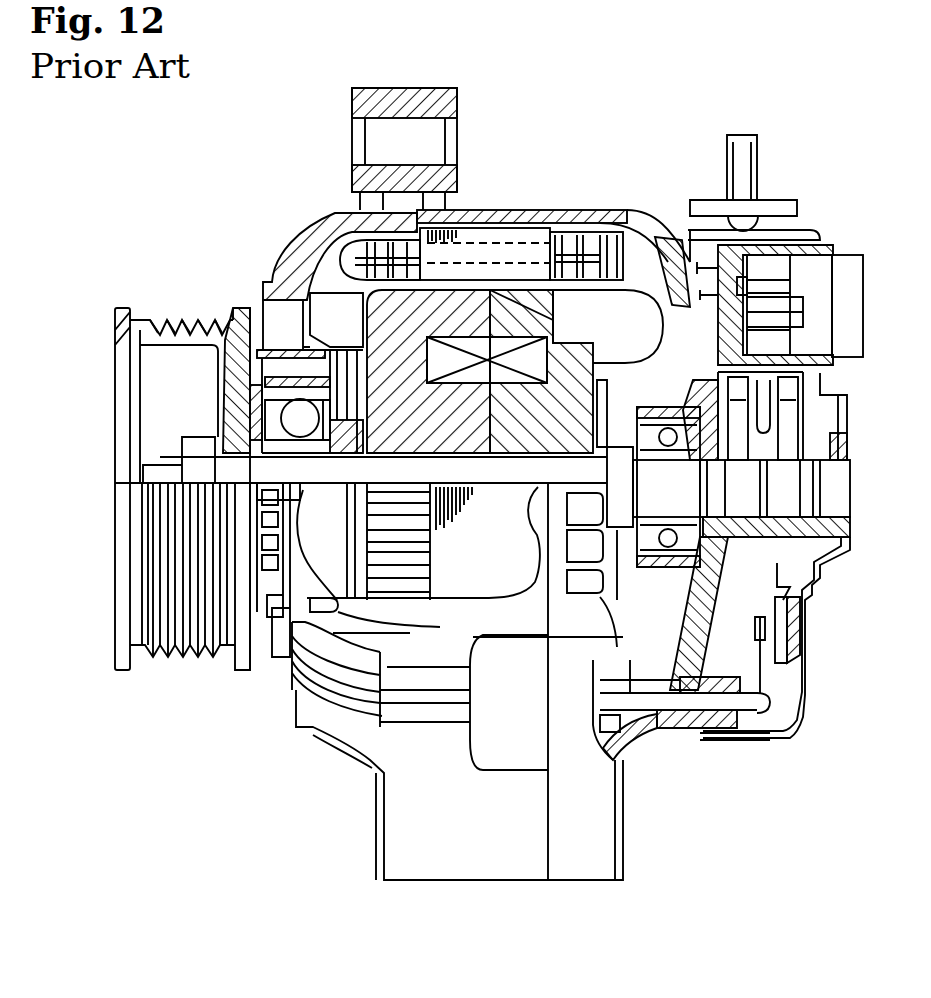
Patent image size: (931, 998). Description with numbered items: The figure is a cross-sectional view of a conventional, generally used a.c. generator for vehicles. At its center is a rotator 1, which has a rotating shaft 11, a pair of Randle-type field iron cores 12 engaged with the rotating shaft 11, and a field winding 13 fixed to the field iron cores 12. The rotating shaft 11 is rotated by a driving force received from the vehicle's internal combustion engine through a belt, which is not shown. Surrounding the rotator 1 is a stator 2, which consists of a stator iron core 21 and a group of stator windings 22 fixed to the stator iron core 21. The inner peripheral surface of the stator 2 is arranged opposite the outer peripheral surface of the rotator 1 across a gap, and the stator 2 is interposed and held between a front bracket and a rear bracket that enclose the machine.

The rotator 1 is at (735, 135).
The rotating shaft 11 is at (222, 410).
The field iron cores 12 is at (490, 317).
The field winding 13 is at (640, 345).
The stator 2 is at (585, 135).
The stator iron core 21 is at (490, 237).
The stator windings 22 is at (573, 237).